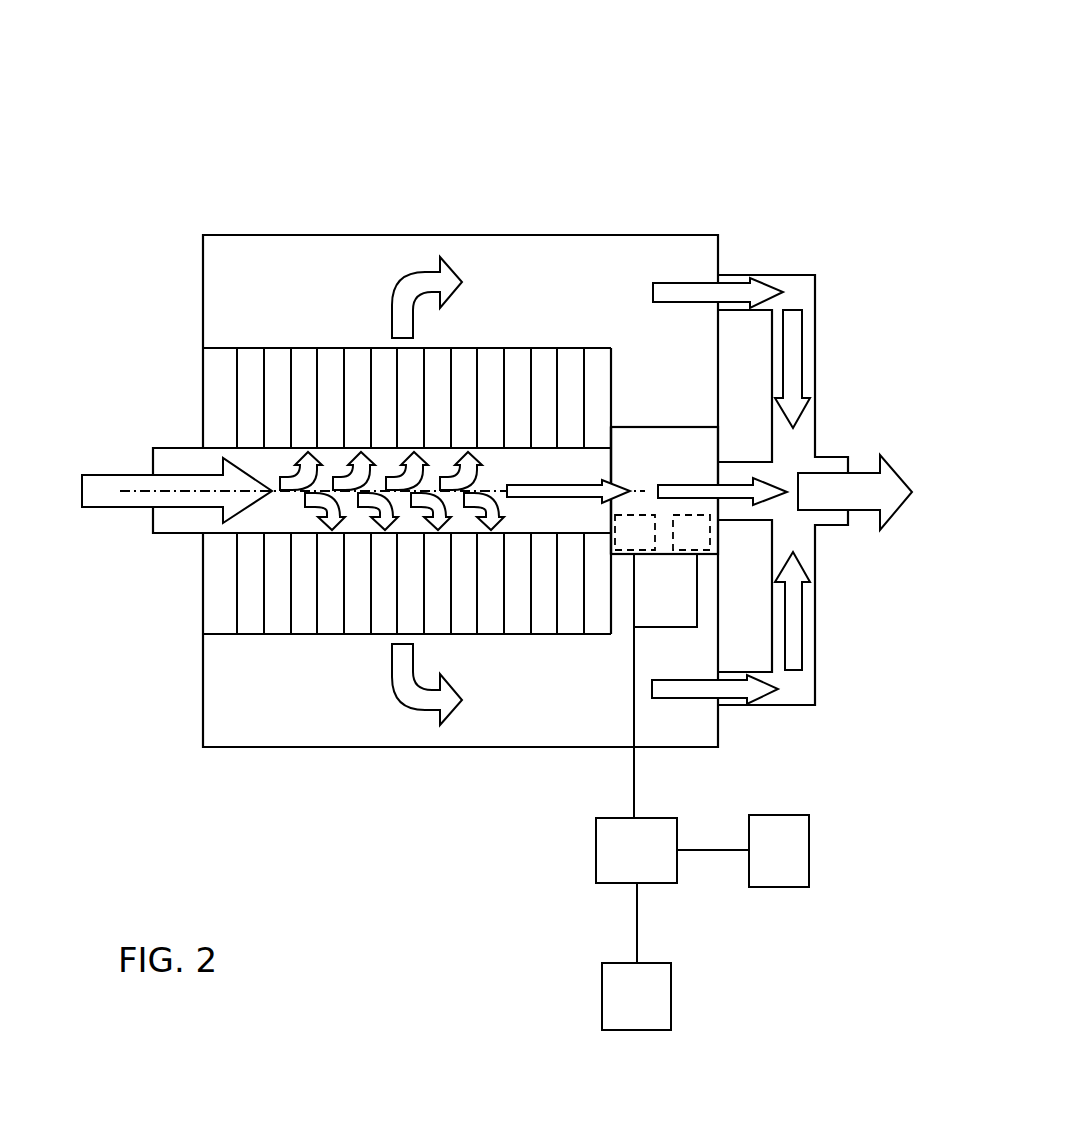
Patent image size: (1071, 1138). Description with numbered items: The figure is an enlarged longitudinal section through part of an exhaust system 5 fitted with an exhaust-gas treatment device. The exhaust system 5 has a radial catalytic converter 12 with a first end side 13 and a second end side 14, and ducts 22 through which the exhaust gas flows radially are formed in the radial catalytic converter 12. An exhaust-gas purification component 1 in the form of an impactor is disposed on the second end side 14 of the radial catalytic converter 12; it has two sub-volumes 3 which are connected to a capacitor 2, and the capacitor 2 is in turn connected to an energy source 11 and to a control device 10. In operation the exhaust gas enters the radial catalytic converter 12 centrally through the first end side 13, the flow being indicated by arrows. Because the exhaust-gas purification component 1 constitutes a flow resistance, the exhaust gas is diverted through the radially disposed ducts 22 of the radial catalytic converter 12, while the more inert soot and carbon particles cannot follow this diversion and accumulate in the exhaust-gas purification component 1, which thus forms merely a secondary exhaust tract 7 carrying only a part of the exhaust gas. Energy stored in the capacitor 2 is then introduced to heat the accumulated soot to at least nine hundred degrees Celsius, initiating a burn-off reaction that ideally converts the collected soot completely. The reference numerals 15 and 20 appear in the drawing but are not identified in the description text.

The exhaust-gas purification component 1 is at (660, 457).
The capacitor 2 is at (596, 866).
The sub-volumes 3 is at (640, 543).
The exhaust system 5 is at (213, 106).
The secondary exhaust tract 7 is at (611, 490).
The control device 10 is at (775, 887).
The energy source 11 is at (602, 1005).
The radial catalytic converter 12 is at (230, 304).
The first end side 13 is at (203, 432).
The second end side 14 is at (604, 572).
The measuring chamber 15 is at (683, 446).
The exhaust gas flow 20 is at (442, 292).
The ducts 22 is at (217, 568).